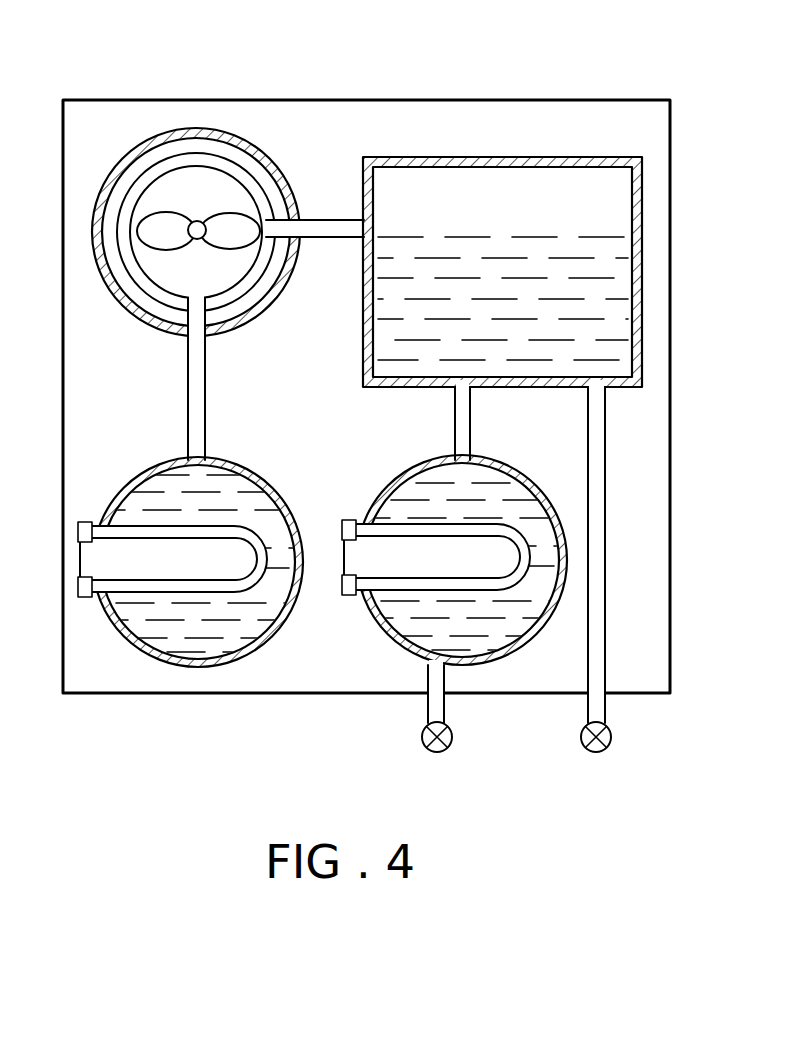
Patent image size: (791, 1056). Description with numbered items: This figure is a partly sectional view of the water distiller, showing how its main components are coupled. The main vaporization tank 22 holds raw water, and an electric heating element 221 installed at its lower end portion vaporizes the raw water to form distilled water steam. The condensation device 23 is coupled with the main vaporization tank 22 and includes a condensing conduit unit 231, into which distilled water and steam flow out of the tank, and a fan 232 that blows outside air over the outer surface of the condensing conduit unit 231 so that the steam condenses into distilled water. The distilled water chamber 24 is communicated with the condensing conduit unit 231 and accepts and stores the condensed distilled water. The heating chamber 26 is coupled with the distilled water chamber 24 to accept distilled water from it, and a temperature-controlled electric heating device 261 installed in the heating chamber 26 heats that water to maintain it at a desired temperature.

The main vaporization tank 22 is at (191, 608).
The electric heating element 221 is at (147, 588).
The condensation device 23 is at (219, 181).
The condensing conduit unit 231 is at (261, 186).
The fan 232 is at (165, 225).
The distilled water chamber 24 is at (545, 173).
The heating chamber 26 is at (446, 551).
The temperature-controlled electric heating device 261 is at (400, 530).